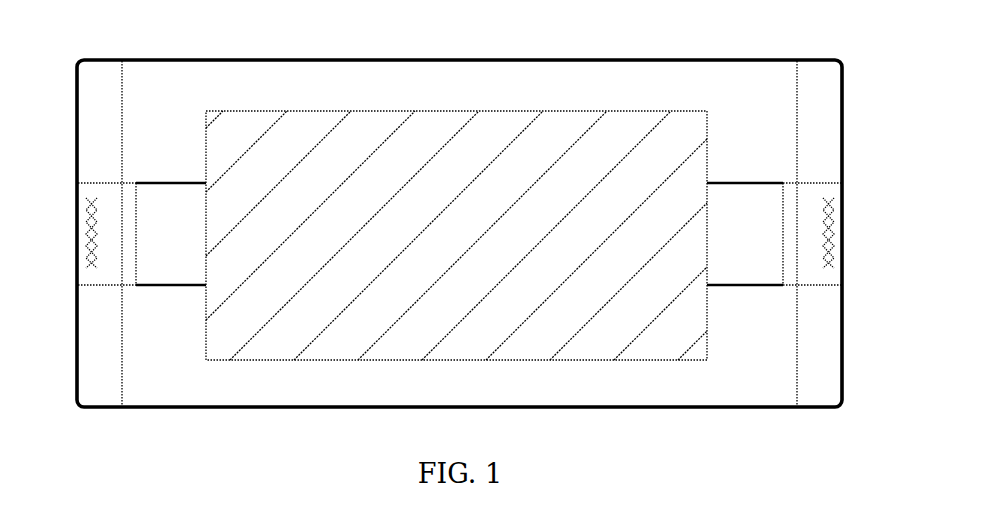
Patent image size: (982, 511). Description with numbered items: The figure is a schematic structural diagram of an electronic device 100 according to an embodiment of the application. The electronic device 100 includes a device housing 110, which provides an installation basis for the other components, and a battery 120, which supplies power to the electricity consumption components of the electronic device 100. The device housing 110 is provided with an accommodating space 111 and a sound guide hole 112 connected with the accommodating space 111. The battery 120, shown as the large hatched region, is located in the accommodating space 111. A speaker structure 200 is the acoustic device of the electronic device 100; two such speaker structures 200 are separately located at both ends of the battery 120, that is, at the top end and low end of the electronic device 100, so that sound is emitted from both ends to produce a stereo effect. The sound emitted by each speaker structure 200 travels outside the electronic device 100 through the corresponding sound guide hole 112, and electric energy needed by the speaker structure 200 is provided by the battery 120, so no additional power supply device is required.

The electronic device 100 is at (338, 56).
The device housing 110 is at (575, 58).
The accommodating space 111 is at (671, 59).
The sound guide hole 112 is at (84, 200).
The battery 120 is at (433, 125).
The speaker structure 200 is at (172, 194).